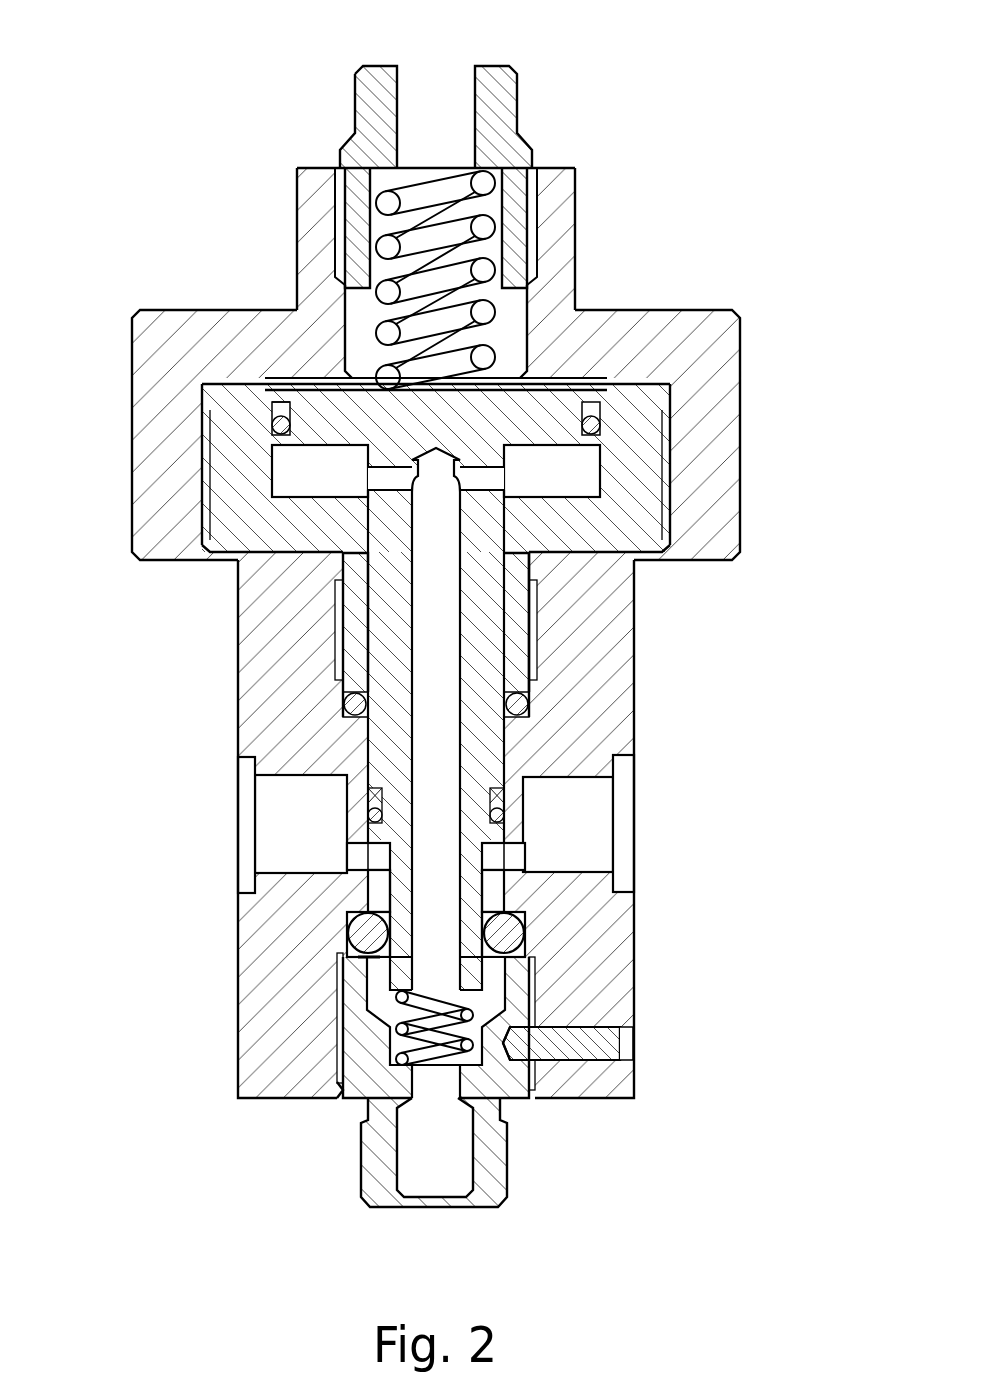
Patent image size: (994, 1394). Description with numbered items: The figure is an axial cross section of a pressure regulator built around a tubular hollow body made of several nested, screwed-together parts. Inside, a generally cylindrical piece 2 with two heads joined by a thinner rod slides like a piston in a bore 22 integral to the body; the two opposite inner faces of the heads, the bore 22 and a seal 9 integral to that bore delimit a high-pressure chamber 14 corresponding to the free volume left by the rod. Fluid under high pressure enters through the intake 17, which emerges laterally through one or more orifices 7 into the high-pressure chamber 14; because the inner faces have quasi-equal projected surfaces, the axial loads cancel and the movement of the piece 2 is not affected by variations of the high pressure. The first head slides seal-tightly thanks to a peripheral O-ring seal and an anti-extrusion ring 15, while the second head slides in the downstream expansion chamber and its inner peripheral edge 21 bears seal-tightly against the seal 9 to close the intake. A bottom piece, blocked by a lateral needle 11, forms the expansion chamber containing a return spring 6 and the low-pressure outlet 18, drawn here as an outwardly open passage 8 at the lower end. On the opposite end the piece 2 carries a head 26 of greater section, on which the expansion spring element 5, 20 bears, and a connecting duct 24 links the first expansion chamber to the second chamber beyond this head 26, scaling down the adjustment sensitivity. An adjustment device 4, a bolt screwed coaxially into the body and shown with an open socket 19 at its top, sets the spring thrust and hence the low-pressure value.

The piece with two heads 2 is at (513, 381).
The adjustment device 4 is at (486, 105).
The mechanical expansion spring 5 is at (492, 312).
The return spring 6 is at (479, 1054).
The orifice 7 is at (345, 860).
The outlet bore 8 is at (453, 1168).
The seal 9 is at (500, 935).
The lateral needle 11 is at (596, 1052).
The high-pressure chamber 14 is at (497, 896).
The anti-extrusion ring 15 is at (503, 797).
The intake 17 is at (272, 830).
The outlet 18 is at (417, 1173).
The socket 19 is at (442, 98).
The expansion spring element 20 is at (366, 337).
The inner peripheral edge 21 is at (365, 968).
The bore 22 is at (359, 723).
The connecting duct 24 is at (428, 595).
The head of greater section 26 is at (318, 412).